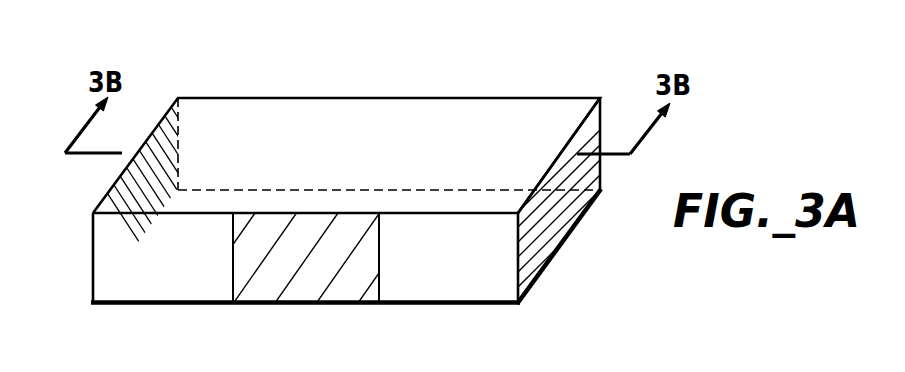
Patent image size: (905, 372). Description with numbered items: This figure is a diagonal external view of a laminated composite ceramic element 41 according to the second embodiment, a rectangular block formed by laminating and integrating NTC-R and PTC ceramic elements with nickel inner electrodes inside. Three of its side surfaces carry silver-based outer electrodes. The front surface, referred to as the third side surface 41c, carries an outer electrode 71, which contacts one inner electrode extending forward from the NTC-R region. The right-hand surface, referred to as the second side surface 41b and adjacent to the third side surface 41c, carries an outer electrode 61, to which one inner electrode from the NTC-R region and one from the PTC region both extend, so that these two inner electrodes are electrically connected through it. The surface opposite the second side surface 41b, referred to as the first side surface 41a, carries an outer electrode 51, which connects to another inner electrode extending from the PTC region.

The laminated composite ceramic element 41 is at (520, 59).
The first side surface 41a is at (180, 128).
The second side surface 41b is at (595, 119).
The third side surface 41c is at (148, 290).
The outer electrode 51 is at (110, 230).
The outer electrode 61 is at (545, 253).
The outer electrode 71 is at (300, 290).